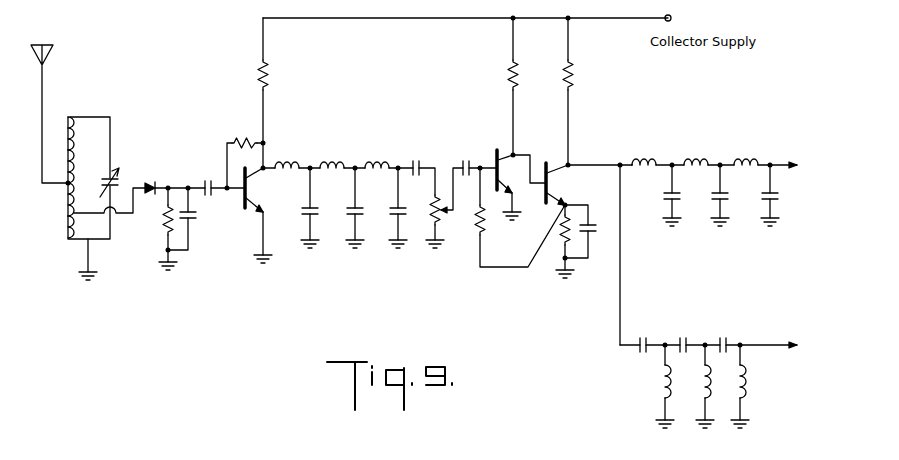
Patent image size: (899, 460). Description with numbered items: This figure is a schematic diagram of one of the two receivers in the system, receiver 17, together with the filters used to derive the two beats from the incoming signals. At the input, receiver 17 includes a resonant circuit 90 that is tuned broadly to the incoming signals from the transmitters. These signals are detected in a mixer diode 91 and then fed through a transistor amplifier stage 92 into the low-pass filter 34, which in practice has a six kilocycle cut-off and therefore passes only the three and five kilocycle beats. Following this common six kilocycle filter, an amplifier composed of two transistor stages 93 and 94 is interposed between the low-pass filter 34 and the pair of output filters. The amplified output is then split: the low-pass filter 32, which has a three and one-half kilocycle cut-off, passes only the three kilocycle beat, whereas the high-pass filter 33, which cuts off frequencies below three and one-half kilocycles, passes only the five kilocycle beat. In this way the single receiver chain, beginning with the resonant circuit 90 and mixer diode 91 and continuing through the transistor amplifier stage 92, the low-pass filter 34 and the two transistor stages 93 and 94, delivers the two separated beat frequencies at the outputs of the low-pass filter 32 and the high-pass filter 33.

The receiver 17 is at (230, 320).
The resonant circuit 90 is at (100, 146).
The mixer diode 91 is at (149, 182).
The transistor amplifier stage 92 is at (245, 205).
The low-pass filter 34 is at (440, 287).
The transistor stage 93 is at (497, 152).
The transistor stage 94 is at (548, 162).
The low-pass filter 32 is at (707, 163).
The high-pass filter 33 is at (716, 342).